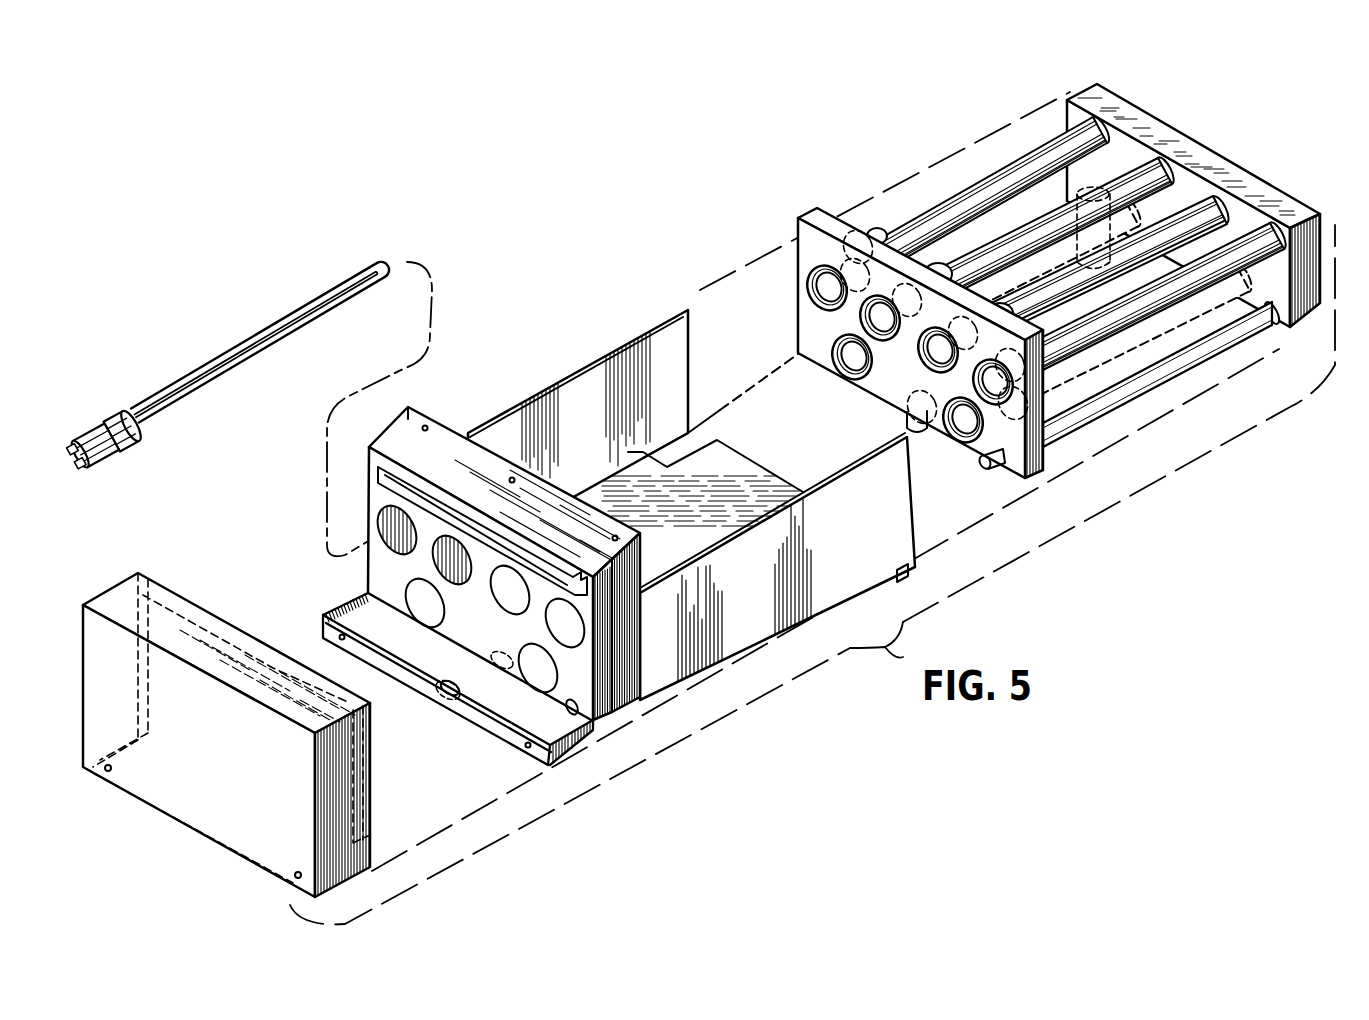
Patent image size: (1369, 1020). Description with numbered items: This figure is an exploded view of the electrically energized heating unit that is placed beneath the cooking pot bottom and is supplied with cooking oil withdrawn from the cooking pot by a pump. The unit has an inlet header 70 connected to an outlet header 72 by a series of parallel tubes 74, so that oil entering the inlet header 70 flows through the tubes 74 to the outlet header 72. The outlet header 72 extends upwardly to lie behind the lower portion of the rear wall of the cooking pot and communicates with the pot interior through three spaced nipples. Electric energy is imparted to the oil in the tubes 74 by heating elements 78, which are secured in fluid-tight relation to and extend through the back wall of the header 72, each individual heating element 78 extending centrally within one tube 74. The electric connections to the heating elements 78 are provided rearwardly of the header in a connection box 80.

The inlet header 70 is at (1147, 128).
The outlet header 72 is at (820, 213).
The parallel tubes 74 is at (1016, 167).
The heating element 78 is at (258, 330).
The connection box 80 is at (170, 621).